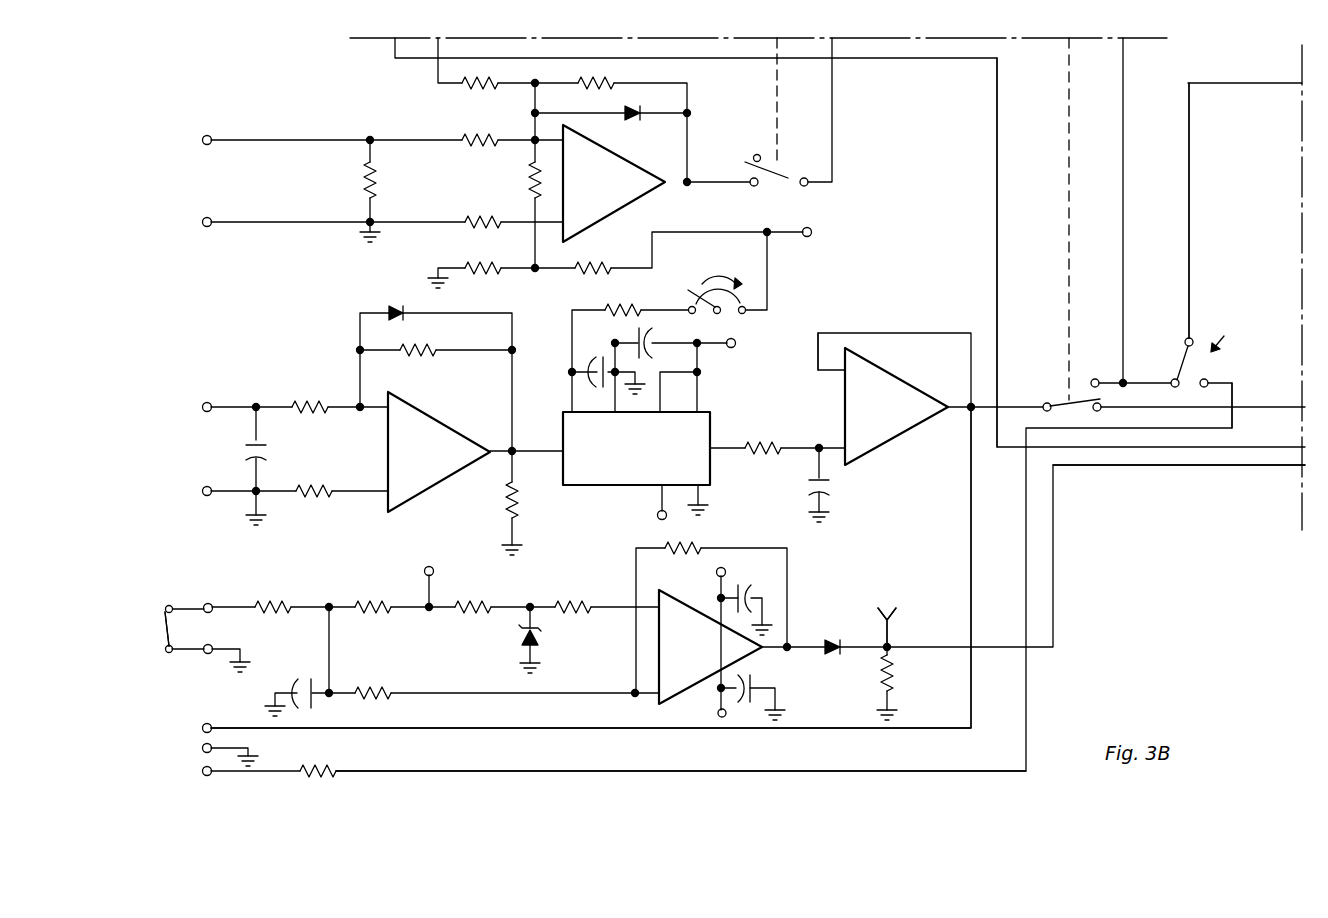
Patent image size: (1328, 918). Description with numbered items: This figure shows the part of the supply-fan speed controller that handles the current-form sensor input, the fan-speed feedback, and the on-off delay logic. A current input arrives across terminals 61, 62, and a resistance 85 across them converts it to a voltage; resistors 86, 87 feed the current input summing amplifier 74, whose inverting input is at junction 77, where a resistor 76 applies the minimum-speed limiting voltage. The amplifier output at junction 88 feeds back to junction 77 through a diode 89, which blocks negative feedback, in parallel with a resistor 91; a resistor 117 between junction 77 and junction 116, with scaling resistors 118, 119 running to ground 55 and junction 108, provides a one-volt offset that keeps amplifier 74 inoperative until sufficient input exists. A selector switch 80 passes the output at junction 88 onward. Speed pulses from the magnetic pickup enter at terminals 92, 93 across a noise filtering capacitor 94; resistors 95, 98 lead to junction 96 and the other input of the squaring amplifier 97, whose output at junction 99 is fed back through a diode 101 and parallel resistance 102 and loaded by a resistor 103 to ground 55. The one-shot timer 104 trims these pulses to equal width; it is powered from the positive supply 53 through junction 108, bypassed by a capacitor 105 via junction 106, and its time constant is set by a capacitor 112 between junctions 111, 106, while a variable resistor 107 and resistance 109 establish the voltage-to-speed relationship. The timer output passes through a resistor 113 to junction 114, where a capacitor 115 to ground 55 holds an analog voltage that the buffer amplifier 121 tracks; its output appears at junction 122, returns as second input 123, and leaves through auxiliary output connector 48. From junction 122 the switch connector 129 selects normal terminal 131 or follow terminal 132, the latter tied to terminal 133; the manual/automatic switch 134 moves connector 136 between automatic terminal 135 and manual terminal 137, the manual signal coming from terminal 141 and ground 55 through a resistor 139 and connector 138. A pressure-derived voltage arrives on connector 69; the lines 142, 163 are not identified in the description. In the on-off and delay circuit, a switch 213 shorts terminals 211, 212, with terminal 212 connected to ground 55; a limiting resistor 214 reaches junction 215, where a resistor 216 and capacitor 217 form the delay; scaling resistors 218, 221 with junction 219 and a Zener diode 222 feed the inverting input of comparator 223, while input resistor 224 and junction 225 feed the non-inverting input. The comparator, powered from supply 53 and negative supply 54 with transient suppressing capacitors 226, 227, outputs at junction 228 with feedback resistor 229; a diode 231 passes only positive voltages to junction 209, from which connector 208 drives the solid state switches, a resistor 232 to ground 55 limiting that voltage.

The auxiliary output connector 48 is at (971, 568).
The positive power supply terminal 53 is at (812, 232).
The negative power supply terminal 54 is at (716, 716).
The ground 55 is at (366, 246).
The current input terminal 61 is at (210, 140).
The current input terminal 62 is at (210, 223).
The connector 69 is at (995, 186).
The current input summing amplifier 74 is at (607, 197).
The resistor 76 is at (467, 92).
The junction 77 is at (534, 138).
The selector switch 80 is at (780, 182).
The resistance 85 is at (376, 181).
The resistor 86 is at (472, 148).
The resistor 87 is at (470, 222).
The junction 88 is at (688, 187).
The diode 89 is at (634, 120).
The resistor 91 is at (606, 75).
The terminal 92 is at (212, 404).
The terminal 93 is at (212, 489).
The noise filtering capacitor 94 is at (272, 445).
The resistor 95 is at (326, 402).
The junction 96 is at (360, 410).
The squaring amplifier 97 is at (434, 465).
The resistor 98 is at (312, 482).
The junction 99 is at (516, 450).
The diode 101 is at (386, 308).
The resistance 102 is at (420, 344).
The loading resistor 103 is at (520, 506).
The one-shot timer 104 is at (654, 462).
The power supply by-pass filter capacitor 105 is at (648, 336).
The junction 106 is at (614, 378).
The feedback adjusting means 107 is at (697, 288).
The junction 108 is at (768, 230).
The resistance 109 is at (620, 302).
The junction 111 is at (573, 372).
The capacitor 112 is at (590, 358).
The resistor 113 is at (777, 438).
The junction 114 is at (830, 432).
The capacitor 115 is at (806, 480).
The junction 116 is at (534, 272).
The resistor 117 is at (530, 182).
The resistor 118 is at (488, 263).
The resistor 119 is at (586, 258).
The buffer amplifier 121 is at (902, 421).
The junction 122 is at (969, 406).
The second input 123 is at (824, 374).
The switch connector 129 is at (1052, 400).
The terminal 131 is at (1096, 412).
The terminal 132 is at (1096, 380).
The terminal 133 is at (1142, 367).
The switch 134 is at (1237, 334).
The first terminal 135 is at (1174, 386).
The switch connector 136 is at (1182, 346).
The second terminal 137 is at (1208, 376).
The connector 138 is at (640, 772).
The resistor 139 is at (338, 762).
The terminal 141 is at (198, 773).
The line 142 is at (1186, 212).
The line 163 is at (1250, 418).
The connector 208 is at (1110, 466).
The junction 209 is at (898, 640).
The terminal 211 is at (212, 604).
The terminal 212 is at (206, 654).
The switch 213 is at (179, 628).
The limiting resistor 214 is at (286, 602).
The junction 215 is at (338, 592).
The resistor 216 is at (400, 602).
The capacitor 217 is at (429, 614).
The resistor 218 is at (490, 602).
The junction 219 is at (540, 586).
The resistor 221 is at (600, 582).
The Zener diode 222 is at (537, 632).
The comparator amplifier 223 is at (716, 661).
The amplifier input resistor 224 is at (394, 682).
The junction 225 is at (636, 698).
The transient suppressing capacitor 226 is at (752, 596).
The transient suppressing capacitor 227 is at (756, 682).
The junction 228 is at (787, 646).
The resistor 229 is at (690, 560).
The diode 231 is at (832, 656).
The resistor 232 is at (900, 666).